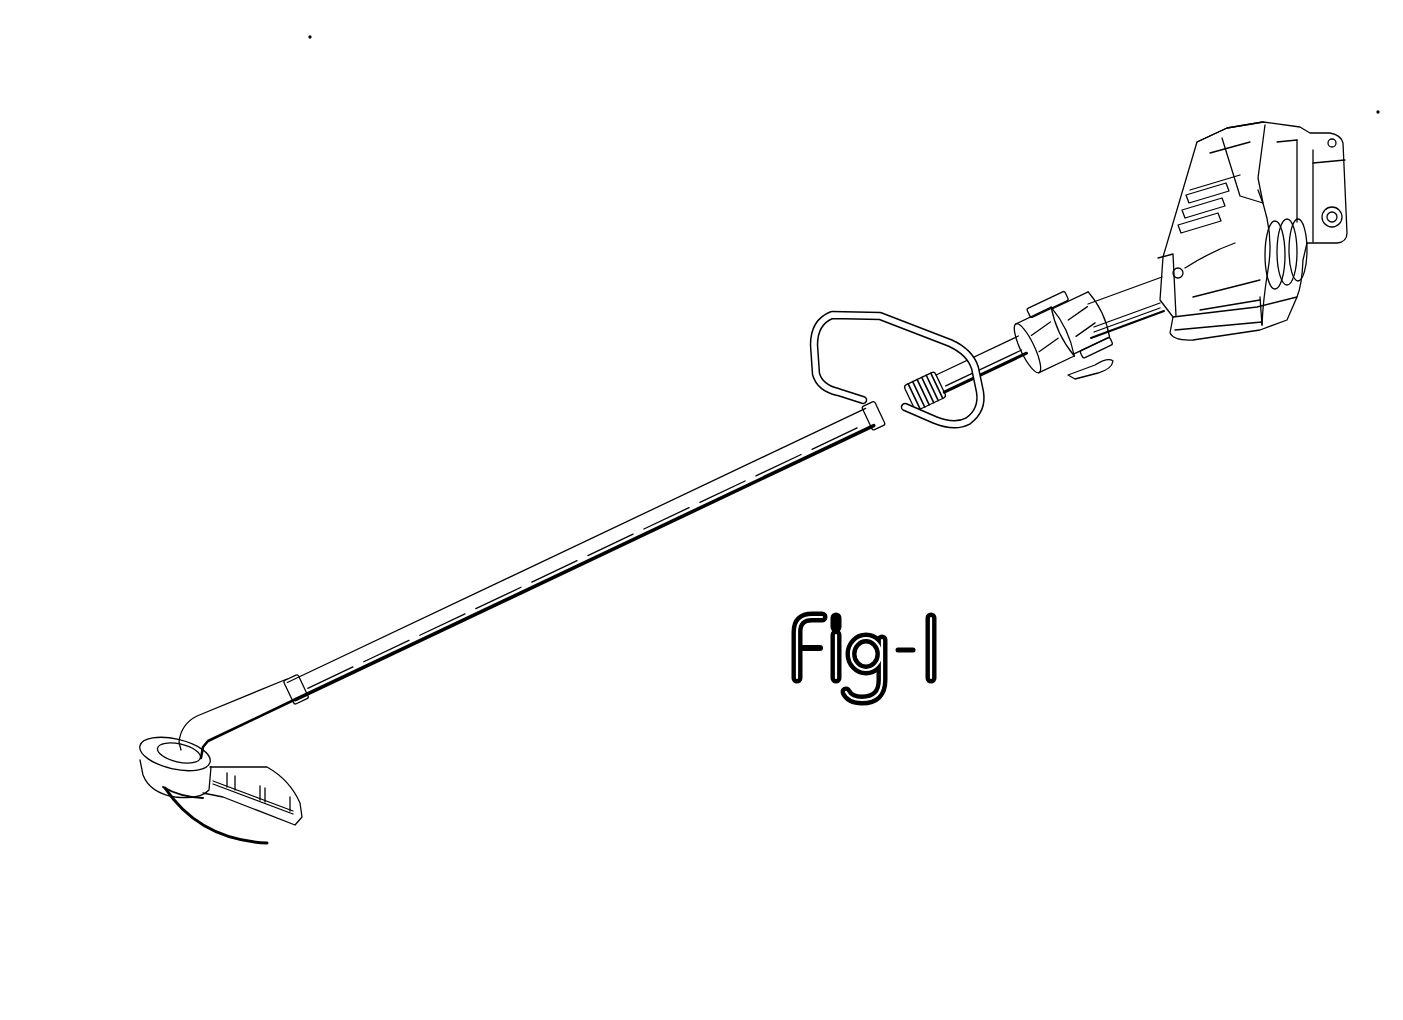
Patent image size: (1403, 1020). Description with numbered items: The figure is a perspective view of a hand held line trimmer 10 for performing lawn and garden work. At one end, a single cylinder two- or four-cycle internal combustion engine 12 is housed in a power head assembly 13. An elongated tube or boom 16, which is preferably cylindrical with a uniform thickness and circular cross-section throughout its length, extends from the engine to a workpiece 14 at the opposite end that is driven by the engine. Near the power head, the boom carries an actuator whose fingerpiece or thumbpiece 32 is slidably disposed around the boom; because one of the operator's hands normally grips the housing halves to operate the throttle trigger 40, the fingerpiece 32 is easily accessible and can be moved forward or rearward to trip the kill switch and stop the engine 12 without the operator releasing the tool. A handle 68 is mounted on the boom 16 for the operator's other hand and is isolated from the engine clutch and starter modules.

The line trimmer 10 is at (650, 193).
The internal combustion engine 12 is at (1345, 274).
The power head assembly 13 is at (1220, 152).
The workpiece 14 is at (161, 808).
The boom 16 is at (597, 533).
The fingerpiece 32 is at (1063, 306).
The throttle trigger 40 is at (1100, 369).
The handle 68 is at (833, 311).